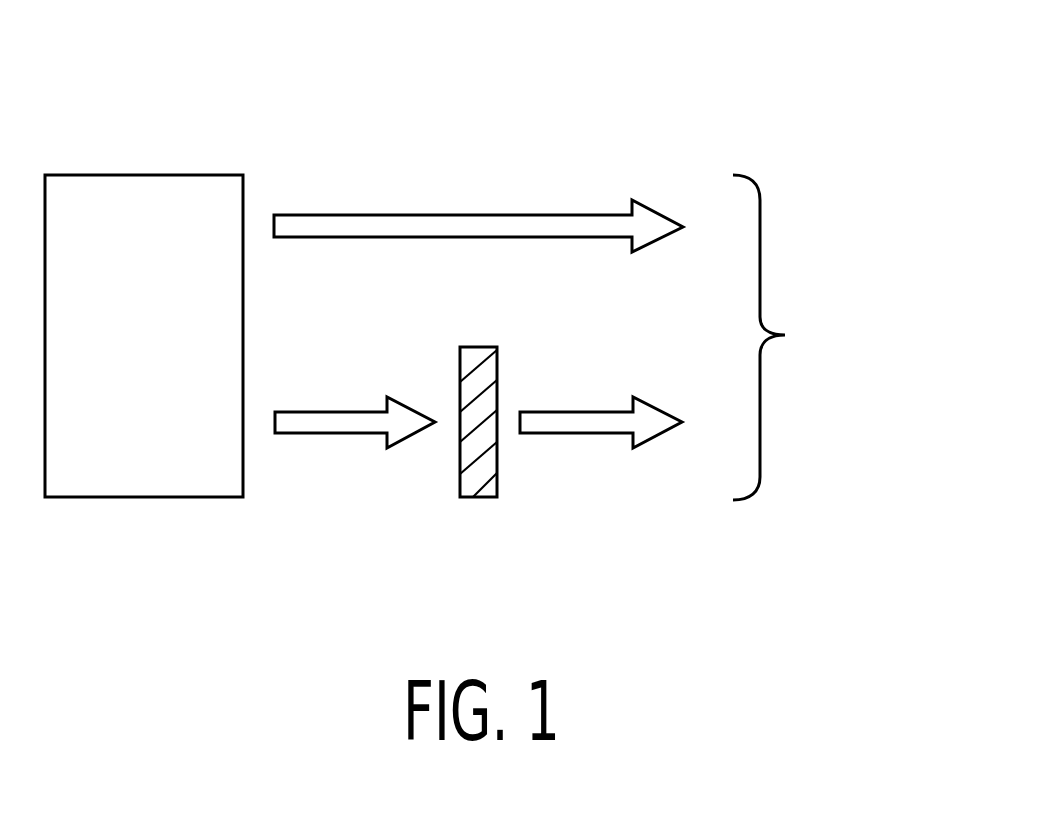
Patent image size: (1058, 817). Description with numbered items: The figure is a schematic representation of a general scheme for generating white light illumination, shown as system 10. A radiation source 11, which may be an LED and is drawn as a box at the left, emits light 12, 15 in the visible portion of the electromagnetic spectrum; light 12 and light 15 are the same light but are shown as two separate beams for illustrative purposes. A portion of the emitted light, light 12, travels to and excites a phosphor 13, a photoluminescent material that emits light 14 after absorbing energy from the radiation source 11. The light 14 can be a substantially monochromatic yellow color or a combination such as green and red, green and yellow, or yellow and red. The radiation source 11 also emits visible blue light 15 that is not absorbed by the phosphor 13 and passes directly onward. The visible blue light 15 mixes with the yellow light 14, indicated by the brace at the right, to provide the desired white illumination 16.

The system 10 is at (877, 107).
The radiation source 11 is at (140, 497).
The light 12 is at (333, 433).
The phosphor 13 is at (477, 497).
The light 14 is at (582, 433).
The visible blue light 15 is at (477, 213).
The white illumination 16 is at (781, 337).